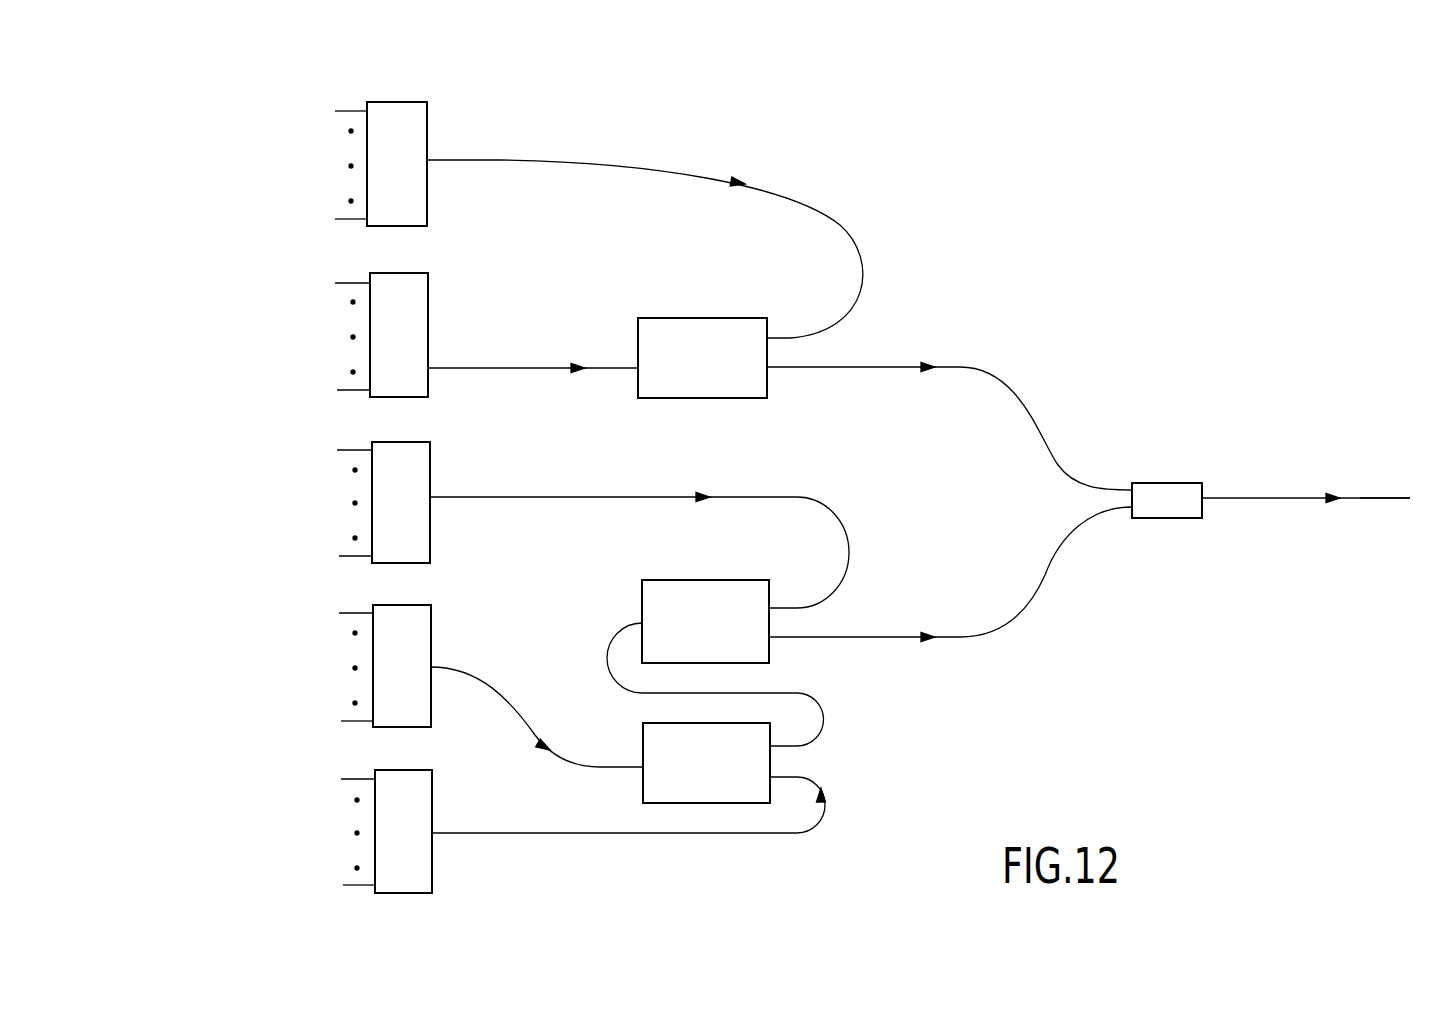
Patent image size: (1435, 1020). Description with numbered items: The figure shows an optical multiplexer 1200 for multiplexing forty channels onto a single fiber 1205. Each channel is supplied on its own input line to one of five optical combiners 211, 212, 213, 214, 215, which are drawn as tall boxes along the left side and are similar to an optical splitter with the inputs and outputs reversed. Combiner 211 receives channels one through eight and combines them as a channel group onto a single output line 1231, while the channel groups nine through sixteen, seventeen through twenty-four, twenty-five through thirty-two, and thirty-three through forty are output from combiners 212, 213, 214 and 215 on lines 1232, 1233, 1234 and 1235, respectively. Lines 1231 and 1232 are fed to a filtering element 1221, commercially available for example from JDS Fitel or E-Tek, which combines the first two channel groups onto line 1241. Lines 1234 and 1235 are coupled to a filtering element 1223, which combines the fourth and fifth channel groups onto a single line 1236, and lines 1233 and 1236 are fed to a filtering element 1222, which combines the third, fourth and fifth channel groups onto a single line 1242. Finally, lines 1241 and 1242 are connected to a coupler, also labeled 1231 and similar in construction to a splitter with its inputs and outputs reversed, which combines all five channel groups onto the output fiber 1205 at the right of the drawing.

The optical combiner 211 is at (392, 102).
The optical combiner 212 is at (395, 273).
The optical combiner 213 is at (397, 442).
The optical combiner 214 is at (398, 605).
The optical combiner 215 is at (400, 770).
The filtering element 1221 is at (685, 318).
The filtering element 1222 is at (703, 580).
The filtering element 1223 is at (643, 787).
The output line 1231 is at (553, 160).
The line 1232 is at (490, 368).
The line 1233 is at (492, 497).
The line 1234 is at (458, 667).
The line 1235 is at (660, 833).
The line 1236 is at (815, 707).
The line 1241 is at (897, 365).
The line 1242 is at (1042, 578).
The single fiber 1205 is at (1378, 497).
The optical multiplexer 1200 is at (1217, 673).